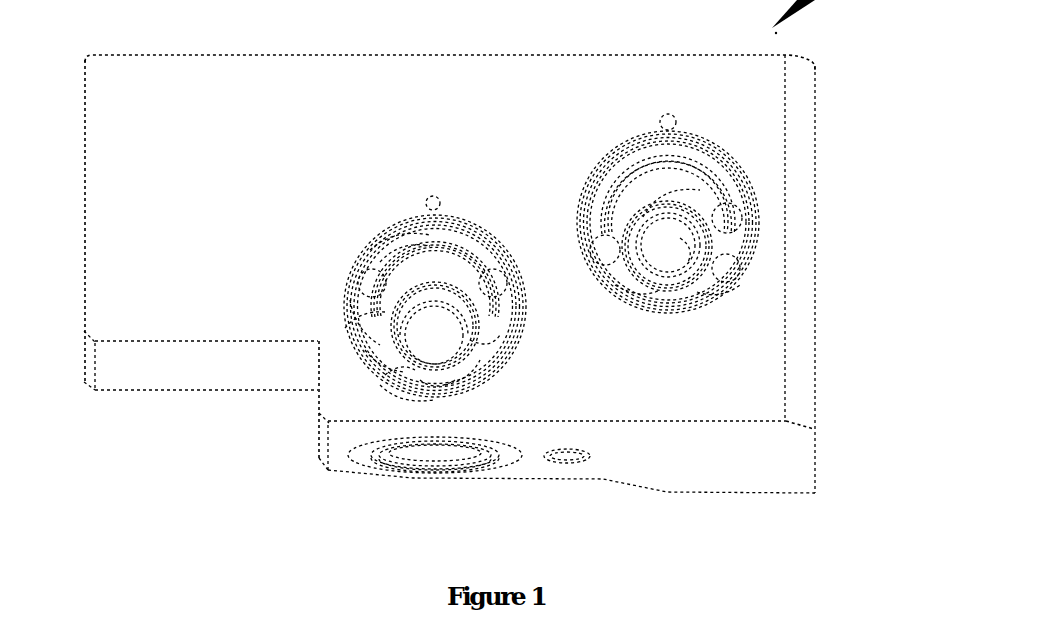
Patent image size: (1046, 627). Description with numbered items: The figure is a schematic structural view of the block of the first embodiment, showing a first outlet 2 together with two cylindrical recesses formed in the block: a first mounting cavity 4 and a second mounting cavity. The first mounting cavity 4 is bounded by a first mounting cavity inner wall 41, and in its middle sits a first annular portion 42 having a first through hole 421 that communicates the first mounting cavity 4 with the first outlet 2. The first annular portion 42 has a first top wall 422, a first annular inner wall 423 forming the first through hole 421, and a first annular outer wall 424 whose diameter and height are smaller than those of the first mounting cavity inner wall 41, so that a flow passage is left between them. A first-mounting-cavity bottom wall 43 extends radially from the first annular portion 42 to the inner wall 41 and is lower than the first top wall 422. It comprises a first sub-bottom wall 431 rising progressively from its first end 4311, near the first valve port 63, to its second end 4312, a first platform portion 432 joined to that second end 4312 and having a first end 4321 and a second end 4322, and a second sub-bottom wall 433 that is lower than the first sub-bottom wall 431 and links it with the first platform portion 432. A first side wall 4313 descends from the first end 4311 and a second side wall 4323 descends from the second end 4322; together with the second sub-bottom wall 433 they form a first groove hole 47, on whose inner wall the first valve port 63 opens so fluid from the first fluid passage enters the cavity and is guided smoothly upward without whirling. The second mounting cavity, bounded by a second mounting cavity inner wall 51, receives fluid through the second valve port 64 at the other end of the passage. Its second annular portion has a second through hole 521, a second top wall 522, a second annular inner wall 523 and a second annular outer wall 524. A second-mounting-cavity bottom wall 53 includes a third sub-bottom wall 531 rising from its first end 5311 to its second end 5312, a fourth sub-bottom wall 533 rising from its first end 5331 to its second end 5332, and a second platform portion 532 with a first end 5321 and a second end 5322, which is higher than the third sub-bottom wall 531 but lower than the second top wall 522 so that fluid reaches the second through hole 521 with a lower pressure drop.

The first outlet 2 is at (449, 290).
The first mounting cavity 4 is at (370, 286).
The first mounting cavity inner wall 41 is at (406, 287).
The first annular portion 42 is at (363, 369).
The first through hole 421 is at (372, 389).
The first top wall 422 is at (416, 399).
The first annular inner wall 423 is at (316, 341).
The first annular outer wall 424 is at (485, 326).
The first-mounting-cavity bottom wall 43 is at (526, 334).
The first sub-bottom wall 431 is at (491, 339).
The first end of the first sub-bottom wall 4311 is at (487, 326).
The second end of the first sub-bottom wall 4312 is at (493, 388).
The first side wall 4313 is at (456, 306).
The first platform portion 432 is at (365, 280).
The first end of the first platform portion 4321 is at (459, 414).
The second end of the first platform portion 4322 is at (329, 307).
The second side wall 4323 is at (368, 279).
The second sub-bottom wall 433 is at (438, 299).
The first groove hole 47 is at (407, 306).
The first valve port 63 is at (415, 302).
The second valve port 64 is at (642, 222).
The second mounting cavity inner wall 51 is at (647, 180).
The second through hole 521 is at (653, 215).
The second top wall 522 is at (680, 155).
The second annular inner wall 523 is at (690, 219).
The second annular outer wall 524 is at (668, 291).
The second-mounting-cavity bottom wall 53 is at (719, 290).
The third sub-bottom wall 531 is at (668, 214).
The first end of the third sub-bottom wall 5311 is at (646, 222).
The second end of the third sub-bottom wall 5312 is at (741, 194).
The second platform portion 532 is at (741, 246).
The first end of the second platform portion 5321 is at (739, 196).
The second end of the second platform portion 5322 is at (718, 261).
The fourth sub-bottom wall 533 is at (640, 331).
The first end of the fourth sub-bottom wall 5331 is at (615, 289).
The second end of the fourth sub-bottom wall 5332 is at (751, 298).